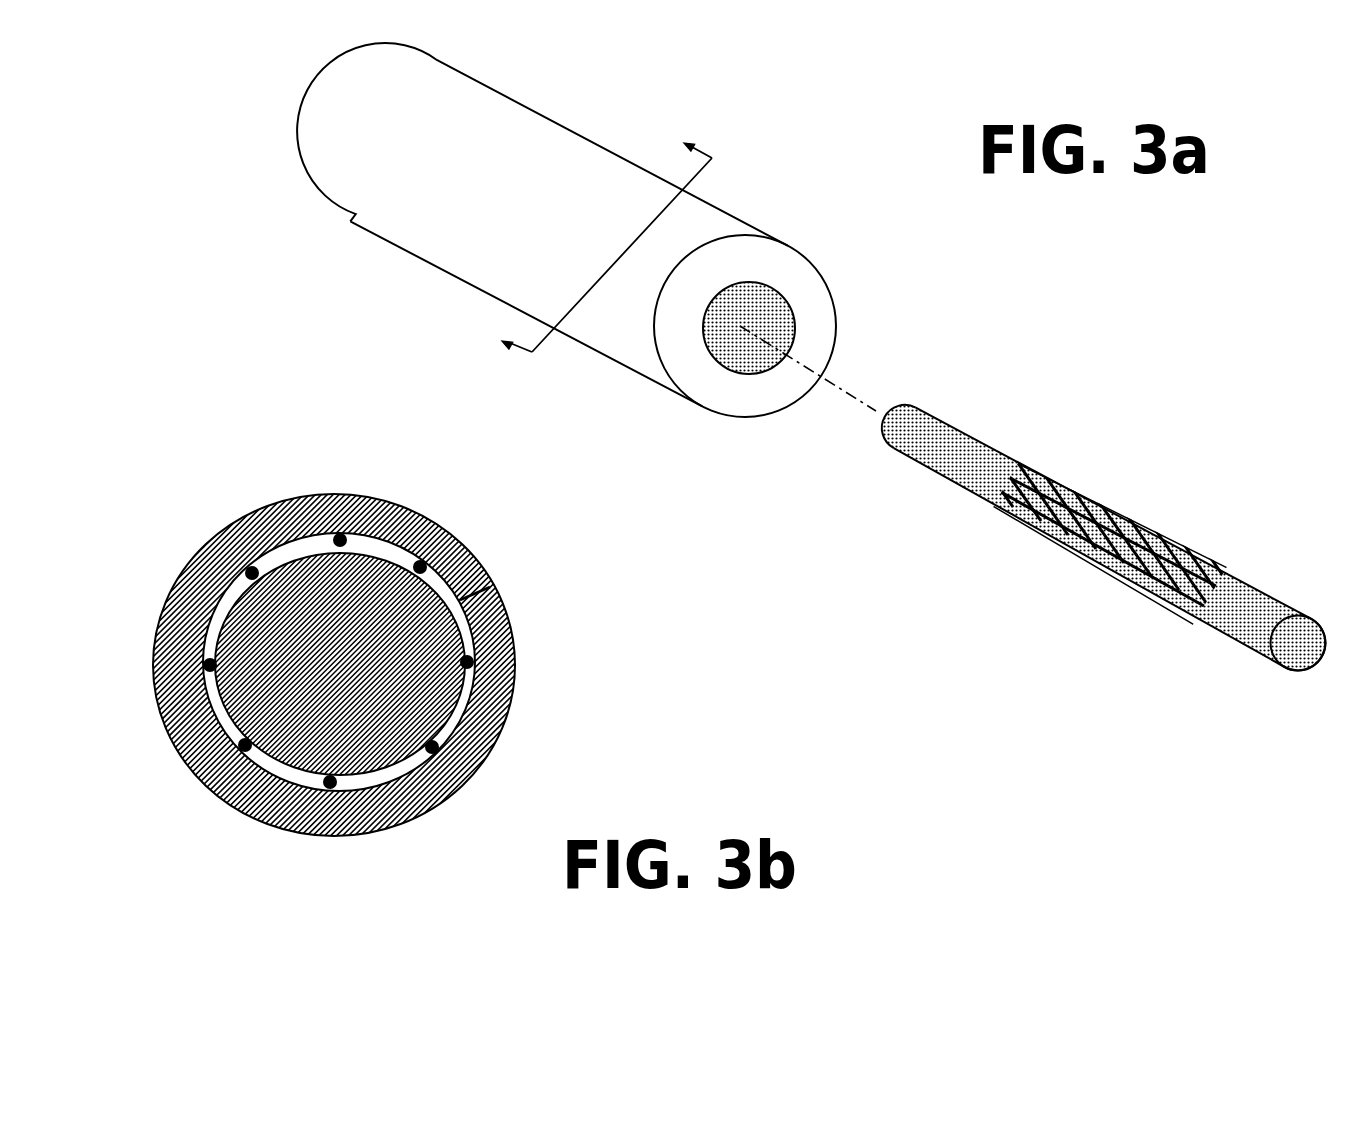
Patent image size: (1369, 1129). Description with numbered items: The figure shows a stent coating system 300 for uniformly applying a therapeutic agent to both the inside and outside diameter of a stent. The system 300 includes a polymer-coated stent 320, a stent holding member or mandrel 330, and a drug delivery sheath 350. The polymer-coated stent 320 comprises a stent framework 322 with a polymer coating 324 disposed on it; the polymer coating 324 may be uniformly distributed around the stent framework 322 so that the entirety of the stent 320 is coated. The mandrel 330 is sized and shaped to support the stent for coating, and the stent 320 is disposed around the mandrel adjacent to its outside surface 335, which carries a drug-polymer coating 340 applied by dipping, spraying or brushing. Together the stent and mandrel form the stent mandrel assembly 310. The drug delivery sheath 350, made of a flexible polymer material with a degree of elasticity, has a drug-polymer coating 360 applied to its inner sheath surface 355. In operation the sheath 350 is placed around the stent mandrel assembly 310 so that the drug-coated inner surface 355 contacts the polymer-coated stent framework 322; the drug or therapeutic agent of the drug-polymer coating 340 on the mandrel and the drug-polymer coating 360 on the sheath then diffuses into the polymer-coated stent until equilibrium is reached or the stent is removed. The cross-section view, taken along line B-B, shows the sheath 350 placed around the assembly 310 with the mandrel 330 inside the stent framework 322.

In FIG. 3a, the stent coating system 300 is at (1200, 274).
In FIG. 3a, the stent mandrel assembly 310 is at (1210, 438).
In FIG. 3a, the polymer-coated stent 320 is at (1093, 485).
In FIG. 3a, the stent framework 322 is at (1040, 460).
In FIG. 3b, the stent framework 322 is at (420, 558).
In FIG. 3a, the polymer coating 324 is at (1168, 530).
In FIG. 3a, the stent holding member (mandrel) 330 is at (898, 456).
In FIG. 3b, the stent holding member (mandrel) 330 is at (360, 587).
In FIG. 3a, the outside surface of mandrel 335 is at (957, 479).
In FIG. 3b, the outside surface of mandrel 335 is at (285, 557).
In FIG. 3a, the drug-polymer coating 340 is at (933, 432).
In FIG. 3a, the drug delivery sheath 350 is at (763, 233).
In FIG. 3b, the drug delivery sheath 350 is at (502, 613).
In FIG. 3a, the inner sheath surface 355 is at (767, 312).
In FIG. 3b, the inner sheath surface 355 is at (455, 730).
In FIG. 3a, the drug-polymer coating 360 is at (723, 323).